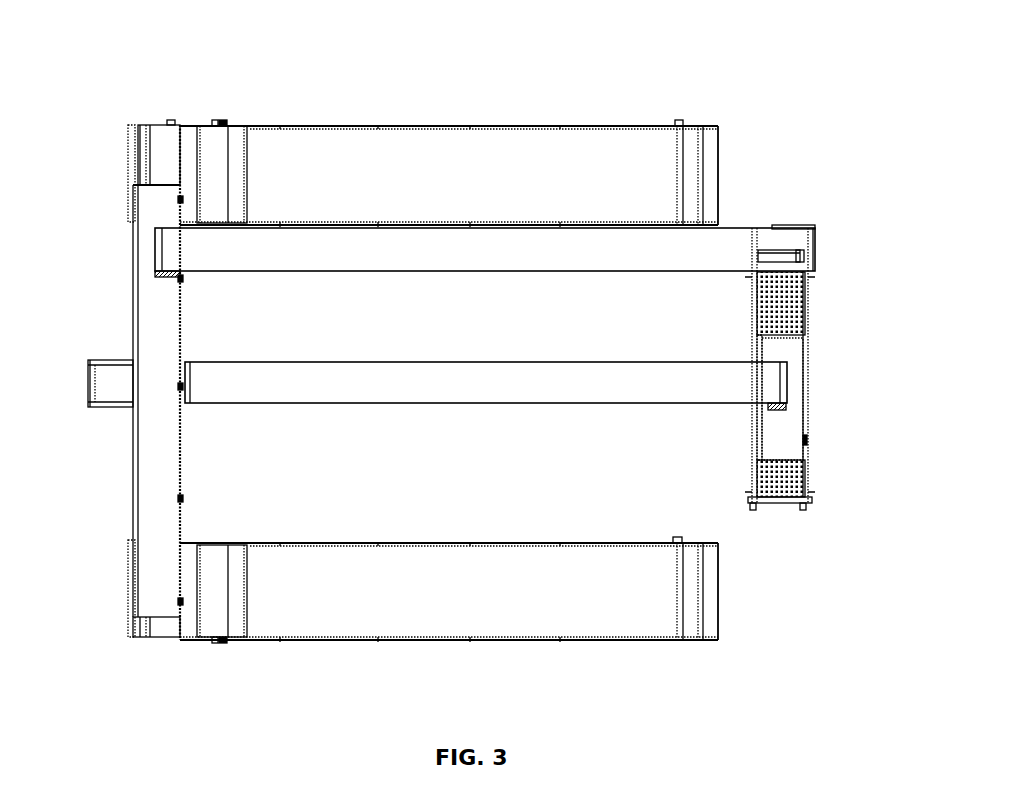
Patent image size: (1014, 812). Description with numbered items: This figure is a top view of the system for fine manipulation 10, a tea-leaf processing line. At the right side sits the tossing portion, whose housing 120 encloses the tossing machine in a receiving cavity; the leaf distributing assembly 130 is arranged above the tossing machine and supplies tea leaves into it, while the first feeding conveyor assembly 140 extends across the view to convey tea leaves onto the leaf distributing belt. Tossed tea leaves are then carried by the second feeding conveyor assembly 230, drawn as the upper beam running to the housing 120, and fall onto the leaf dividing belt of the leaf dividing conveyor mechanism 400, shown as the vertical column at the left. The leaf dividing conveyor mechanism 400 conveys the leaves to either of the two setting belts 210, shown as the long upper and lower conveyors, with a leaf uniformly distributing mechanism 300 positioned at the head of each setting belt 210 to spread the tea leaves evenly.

The system for fine manipulation 10 is at (70, 25).
The housing 120 is at (805, 480).
The leaf distributing assembly 130 is at (783, 433).
The first feeding conveyor assembly 140 is at (753, 386).
The setting belt 210 is at (627, 160).
The second feeding conveyor assembly 230 is at (708, 258).
The leaf uniformly distributing mechanism 300 is at (214, 165).
The leaf dividing conveyor mechanism 400 is at (158, 445).